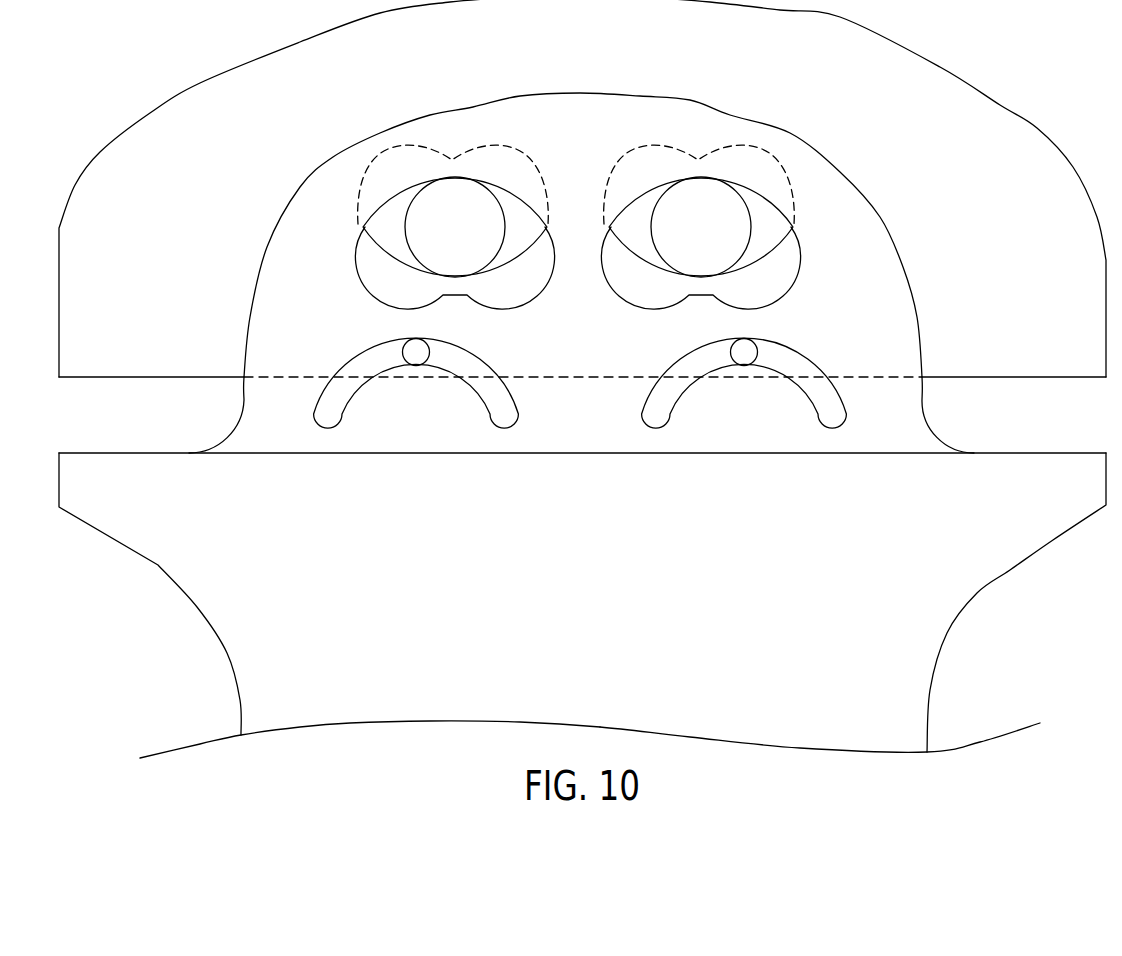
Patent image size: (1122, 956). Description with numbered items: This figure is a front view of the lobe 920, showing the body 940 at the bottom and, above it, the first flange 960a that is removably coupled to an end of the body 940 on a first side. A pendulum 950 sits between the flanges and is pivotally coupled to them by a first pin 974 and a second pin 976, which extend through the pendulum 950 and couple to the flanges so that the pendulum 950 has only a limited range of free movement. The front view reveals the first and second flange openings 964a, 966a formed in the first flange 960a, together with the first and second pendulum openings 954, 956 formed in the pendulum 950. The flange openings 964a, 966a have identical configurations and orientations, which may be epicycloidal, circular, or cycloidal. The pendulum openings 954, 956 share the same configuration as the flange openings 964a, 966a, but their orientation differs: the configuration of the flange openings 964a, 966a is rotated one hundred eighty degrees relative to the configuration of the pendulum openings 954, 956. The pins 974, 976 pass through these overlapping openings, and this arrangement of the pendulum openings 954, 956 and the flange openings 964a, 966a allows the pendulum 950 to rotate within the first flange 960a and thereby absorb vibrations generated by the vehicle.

The pendulum 950 is at (1037, 128).
The first flange 960a is at (940, 438).
The lobe 920 is at (158, 565).
The body 940 is at (977, 595).
The first pendulum opening 954 is at (650, 147).
The second pendulum opening 956 is at (418, 147).
The first pin 974 is at (727, 180).
The second pin 976 is at (455, 178).
The first flange opening 964a is at (796, 270).
The second flange opening 966a is at (360, 270).